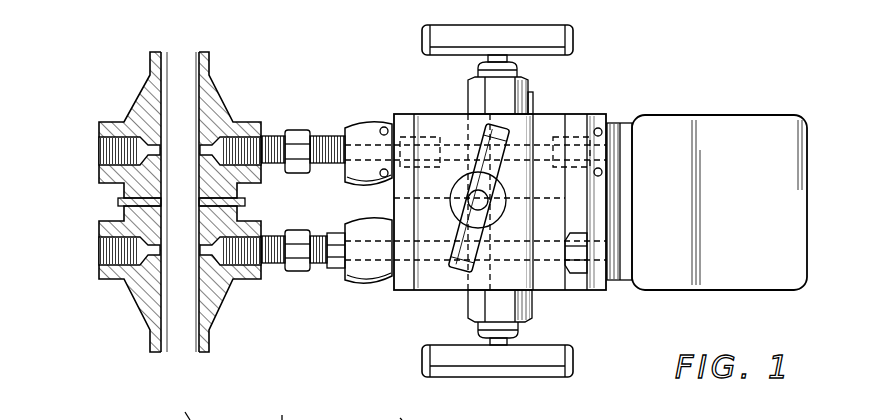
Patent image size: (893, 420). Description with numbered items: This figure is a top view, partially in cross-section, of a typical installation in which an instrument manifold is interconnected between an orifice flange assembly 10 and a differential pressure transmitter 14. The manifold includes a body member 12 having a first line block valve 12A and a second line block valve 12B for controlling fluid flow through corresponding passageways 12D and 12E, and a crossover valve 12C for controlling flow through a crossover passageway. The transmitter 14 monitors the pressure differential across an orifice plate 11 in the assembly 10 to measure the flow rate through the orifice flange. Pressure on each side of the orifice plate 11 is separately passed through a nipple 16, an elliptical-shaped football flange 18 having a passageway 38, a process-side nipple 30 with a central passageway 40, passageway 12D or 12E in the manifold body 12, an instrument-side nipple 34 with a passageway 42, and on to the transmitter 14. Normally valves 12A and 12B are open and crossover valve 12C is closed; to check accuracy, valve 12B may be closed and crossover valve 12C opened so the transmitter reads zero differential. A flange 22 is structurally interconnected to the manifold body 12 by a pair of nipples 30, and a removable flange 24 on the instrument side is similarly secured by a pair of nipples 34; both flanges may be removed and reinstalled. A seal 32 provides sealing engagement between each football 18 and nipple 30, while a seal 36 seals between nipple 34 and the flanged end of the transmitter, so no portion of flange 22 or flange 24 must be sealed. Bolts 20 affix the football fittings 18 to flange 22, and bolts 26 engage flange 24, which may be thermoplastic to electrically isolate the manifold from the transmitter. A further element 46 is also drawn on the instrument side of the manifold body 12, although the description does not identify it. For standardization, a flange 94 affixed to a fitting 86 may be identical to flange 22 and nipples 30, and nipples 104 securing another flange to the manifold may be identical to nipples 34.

The orifice flange assembly 10 is at (128, 85).
The orifice plate 11 is at (118, 202).
The manifold body 12 is at (390, 202).
The first line block valve 12A is at (440, 38).
The second line block valve 12B is at (487, 366).
The crossover valve 12C is at (462, 252).
The passageway 12D is at (517, 152).
The passageway 12E is at (532, 316).
The transmitter 14 is at (740, 150).
The nipple 16 is at (278, 132).
The football flange 18 is at (372, 268).
The bolts 20 is at (334, 270).
The flange 22 is at (413, 266).
The removable flange 24 is at (608, 284).
The bolts 26 is at (572, 272).
The process-side nipple 30 is at (425, 112).
The seal 32 is at (384, 123).
The instrument-side nipple 34 is at (585, 118).
The seal 36 is at (612, 120).
The passageway 38 is at (356, 134).
The central passageway 40 is at (406, 136).
The passageway 42 is at (608, 158).
The hex plug 46 is at (600, 224).
The fitting 86 is at (198, 411).
The flange 94 is at (282, 409).
The nipple 104 is at (408, 412).